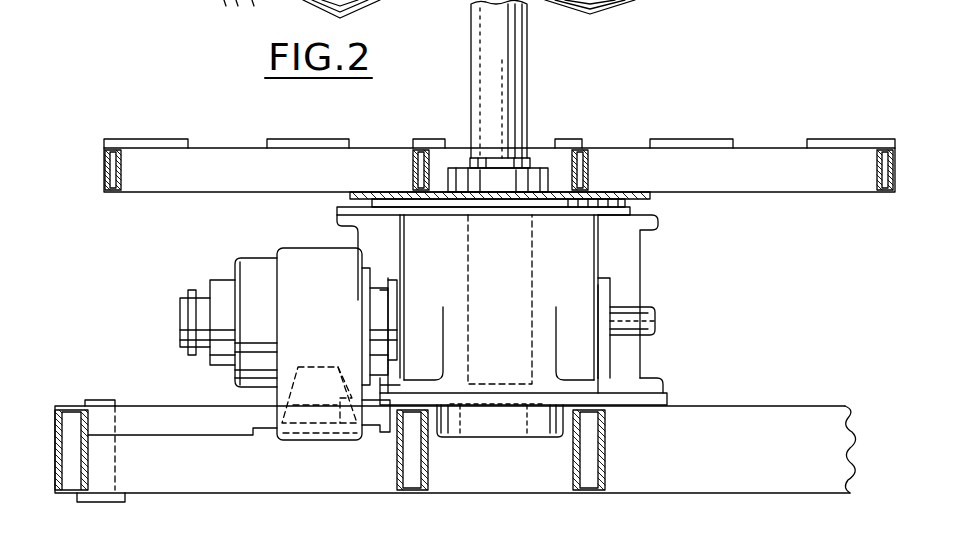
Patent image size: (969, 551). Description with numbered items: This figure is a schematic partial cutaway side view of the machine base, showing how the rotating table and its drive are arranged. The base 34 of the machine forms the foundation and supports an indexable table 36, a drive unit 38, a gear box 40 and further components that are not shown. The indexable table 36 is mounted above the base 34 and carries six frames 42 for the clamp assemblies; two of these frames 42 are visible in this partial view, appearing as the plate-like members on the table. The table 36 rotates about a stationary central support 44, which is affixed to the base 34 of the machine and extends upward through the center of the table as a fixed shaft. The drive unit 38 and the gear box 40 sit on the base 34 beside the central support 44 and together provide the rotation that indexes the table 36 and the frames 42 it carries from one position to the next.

The base 34 is at (748, 416).
The indexable table 36 is at (650, 196).
The drive unit 38 is at (627, 277).
The gear box 40 is at (314, 258).
The frame 42 is at (163, 194).
The stationary central support 44 is at (510, 89).